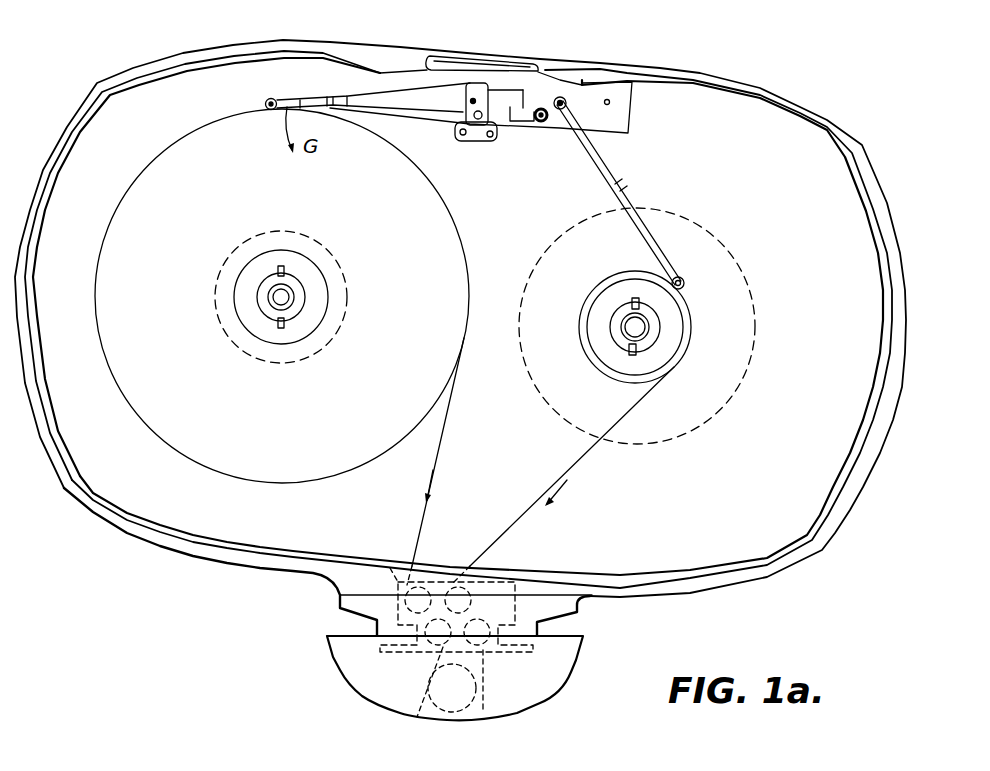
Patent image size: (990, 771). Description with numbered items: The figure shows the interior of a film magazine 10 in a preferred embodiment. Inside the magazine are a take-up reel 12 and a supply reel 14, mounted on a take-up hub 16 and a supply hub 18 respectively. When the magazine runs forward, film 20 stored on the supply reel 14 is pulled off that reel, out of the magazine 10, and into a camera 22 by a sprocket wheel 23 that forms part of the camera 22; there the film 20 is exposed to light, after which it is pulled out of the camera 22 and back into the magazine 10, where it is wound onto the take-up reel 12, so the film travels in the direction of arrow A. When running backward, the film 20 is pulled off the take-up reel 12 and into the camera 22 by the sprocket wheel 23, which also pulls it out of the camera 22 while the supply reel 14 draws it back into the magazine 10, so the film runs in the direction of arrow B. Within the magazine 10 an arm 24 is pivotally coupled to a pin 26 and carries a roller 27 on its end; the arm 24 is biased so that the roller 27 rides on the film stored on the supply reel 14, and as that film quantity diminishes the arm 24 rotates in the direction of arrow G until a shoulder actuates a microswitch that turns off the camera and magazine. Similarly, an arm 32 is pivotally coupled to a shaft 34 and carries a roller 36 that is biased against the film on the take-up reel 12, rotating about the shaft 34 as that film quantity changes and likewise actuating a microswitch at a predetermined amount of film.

The film magazine 10 is at (845, 106).
The take-up reel 12 is at (687, 351).
The supply reel 14 is at (319, 243).
The take-up hub 16 is at (657, 318).
The supply hub 18 is at (294, 299).
The film 20 is at (442, 455).
The camera 22 is at (350, 653).
The sprocket wheel 23 is at (447, 687).
The arm 24 is at (310, 96).
The pin 26 is at (458, 124).
The roller 27 is at (269, 99).
The arm 32 is at (627, 176).
The shaft 34 is at (562, 97).
The roller 36 is at (682, 280).